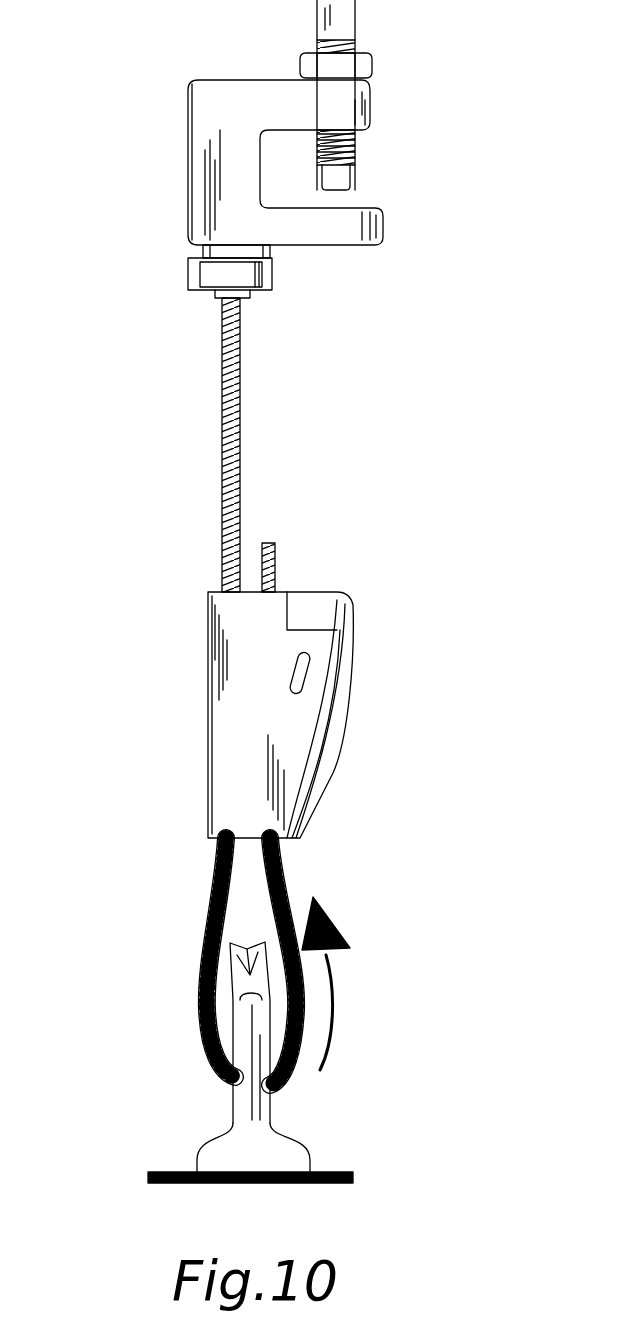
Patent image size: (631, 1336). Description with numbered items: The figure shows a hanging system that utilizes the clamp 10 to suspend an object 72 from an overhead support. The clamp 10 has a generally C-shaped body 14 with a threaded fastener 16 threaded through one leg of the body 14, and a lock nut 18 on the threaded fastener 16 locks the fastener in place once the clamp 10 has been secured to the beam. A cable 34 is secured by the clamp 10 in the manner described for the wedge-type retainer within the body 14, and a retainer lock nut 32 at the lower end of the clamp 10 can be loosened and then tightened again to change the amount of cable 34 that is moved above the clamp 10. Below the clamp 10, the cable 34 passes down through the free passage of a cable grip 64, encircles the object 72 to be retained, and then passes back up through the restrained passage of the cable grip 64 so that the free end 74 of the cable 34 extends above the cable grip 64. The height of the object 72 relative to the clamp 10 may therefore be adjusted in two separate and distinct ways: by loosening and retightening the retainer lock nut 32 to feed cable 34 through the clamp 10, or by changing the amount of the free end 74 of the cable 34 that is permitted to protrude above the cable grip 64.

The clamp 10 is at (131, 204).
The "C" shaped body 14 is at (222, 110).
The threaded fastener 16 is at (337, 30).
The lock nut 18 is at (372, 62).
The retainer lock nut 32 is at (243, 277).
The cable 34 is at (237, 488).
The cable grip 64 is at (228, 738).
The object 72 is at (273, 1148).
The free end 74 is at (275, 553).